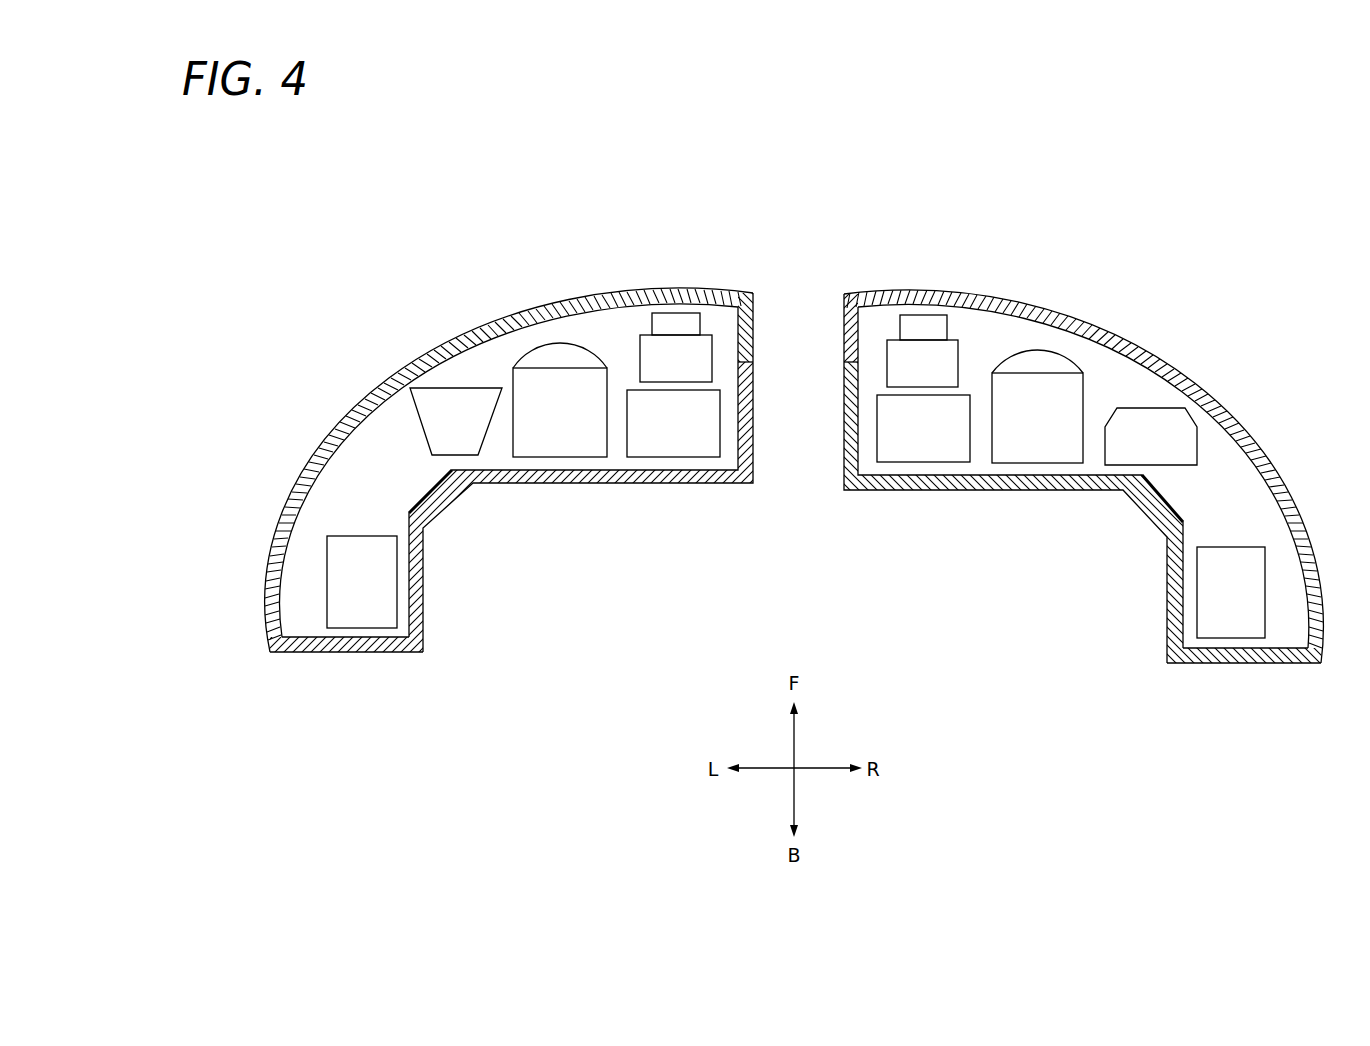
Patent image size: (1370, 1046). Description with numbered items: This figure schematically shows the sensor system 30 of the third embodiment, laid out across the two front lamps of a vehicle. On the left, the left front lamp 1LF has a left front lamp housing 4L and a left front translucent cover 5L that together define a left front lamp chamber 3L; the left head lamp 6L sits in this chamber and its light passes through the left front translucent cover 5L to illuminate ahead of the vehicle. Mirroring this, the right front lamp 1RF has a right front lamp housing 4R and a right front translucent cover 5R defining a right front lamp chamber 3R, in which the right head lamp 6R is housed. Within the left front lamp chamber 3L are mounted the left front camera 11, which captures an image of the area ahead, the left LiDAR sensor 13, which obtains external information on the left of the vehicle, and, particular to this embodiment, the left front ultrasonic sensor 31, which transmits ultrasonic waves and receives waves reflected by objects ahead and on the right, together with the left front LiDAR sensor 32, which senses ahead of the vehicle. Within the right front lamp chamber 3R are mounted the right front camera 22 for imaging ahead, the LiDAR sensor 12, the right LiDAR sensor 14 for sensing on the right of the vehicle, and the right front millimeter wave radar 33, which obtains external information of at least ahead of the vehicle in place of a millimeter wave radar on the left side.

The sensor system 30 is at (813, 203).
The left front lamp 1LF is at (498, 290).
The right front lamp 1RF is at (1202, 288).
The left front lamp chamber 3L is at (345, 473).
The right front lamp chamber 3R is at (1252, 470).
The left front lamp housing 4L is at (370, 653).
The right front lamp housing 4R is at (1217, 665).
The left front translucent cover 5L is at (362, 398).
The right front translucent cover 5R is at (1235, 407).
The left head lamp 6L is at (562, 447).
The right head lamp 6R is at (1032, 450).
The left front camera 11 is at (673, 318).
The LiDAR sensor 12 is at (920, 450).
The left LiDAR sensor 13 is at (387, 597).
The right LiDAR sensor 14 is at (1205, 602).
The right front camera 22 is at (922, 318).
The left front ultrasonic sensor 31 is at (470, 447).
The left front LiDAR sensor 32 is at (673, 448).
The right front millimeter wave radar 33 is at (1128, 455).